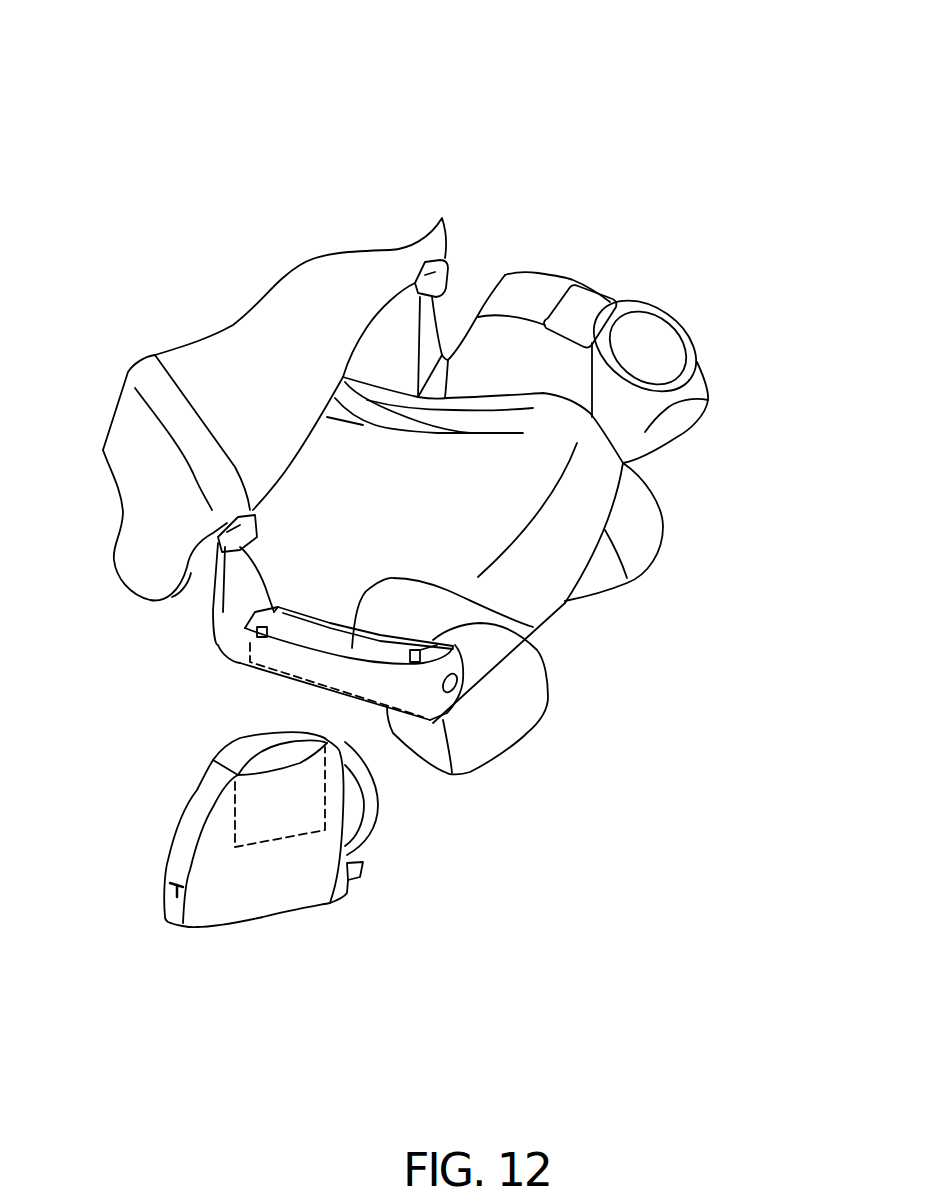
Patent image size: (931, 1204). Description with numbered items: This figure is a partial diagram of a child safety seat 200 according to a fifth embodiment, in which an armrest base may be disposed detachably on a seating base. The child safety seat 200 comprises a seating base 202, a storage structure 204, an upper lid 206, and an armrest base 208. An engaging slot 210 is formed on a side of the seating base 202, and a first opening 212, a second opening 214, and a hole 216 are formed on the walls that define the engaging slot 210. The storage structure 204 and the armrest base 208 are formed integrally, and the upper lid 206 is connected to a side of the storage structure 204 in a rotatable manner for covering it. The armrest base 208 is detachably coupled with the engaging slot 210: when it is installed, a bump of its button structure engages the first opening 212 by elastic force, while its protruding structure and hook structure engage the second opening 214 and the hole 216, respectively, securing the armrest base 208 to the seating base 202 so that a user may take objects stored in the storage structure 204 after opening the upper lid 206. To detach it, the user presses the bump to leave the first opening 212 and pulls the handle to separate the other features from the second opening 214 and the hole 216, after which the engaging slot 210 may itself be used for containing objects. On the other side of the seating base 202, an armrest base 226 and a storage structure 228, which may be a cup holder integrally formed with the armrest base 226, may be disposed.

The child safety seat 200 is at (670, 112).
The seating base 202 is at (580, 478).
The storage structure 204 is at (253, 815).
The upper lid 206 is at (243, 748).
The armrest base 208 is at (205, 877).
The engaging slot 210 is at (533, 627).
The first opening 212 is at (528, 733).
The second opening 214 is at (272, 630).
The hole 216 is at (530, 647).
The armrest base 226 is at (518, 295).
The storage structure 228 is at (707, 398).